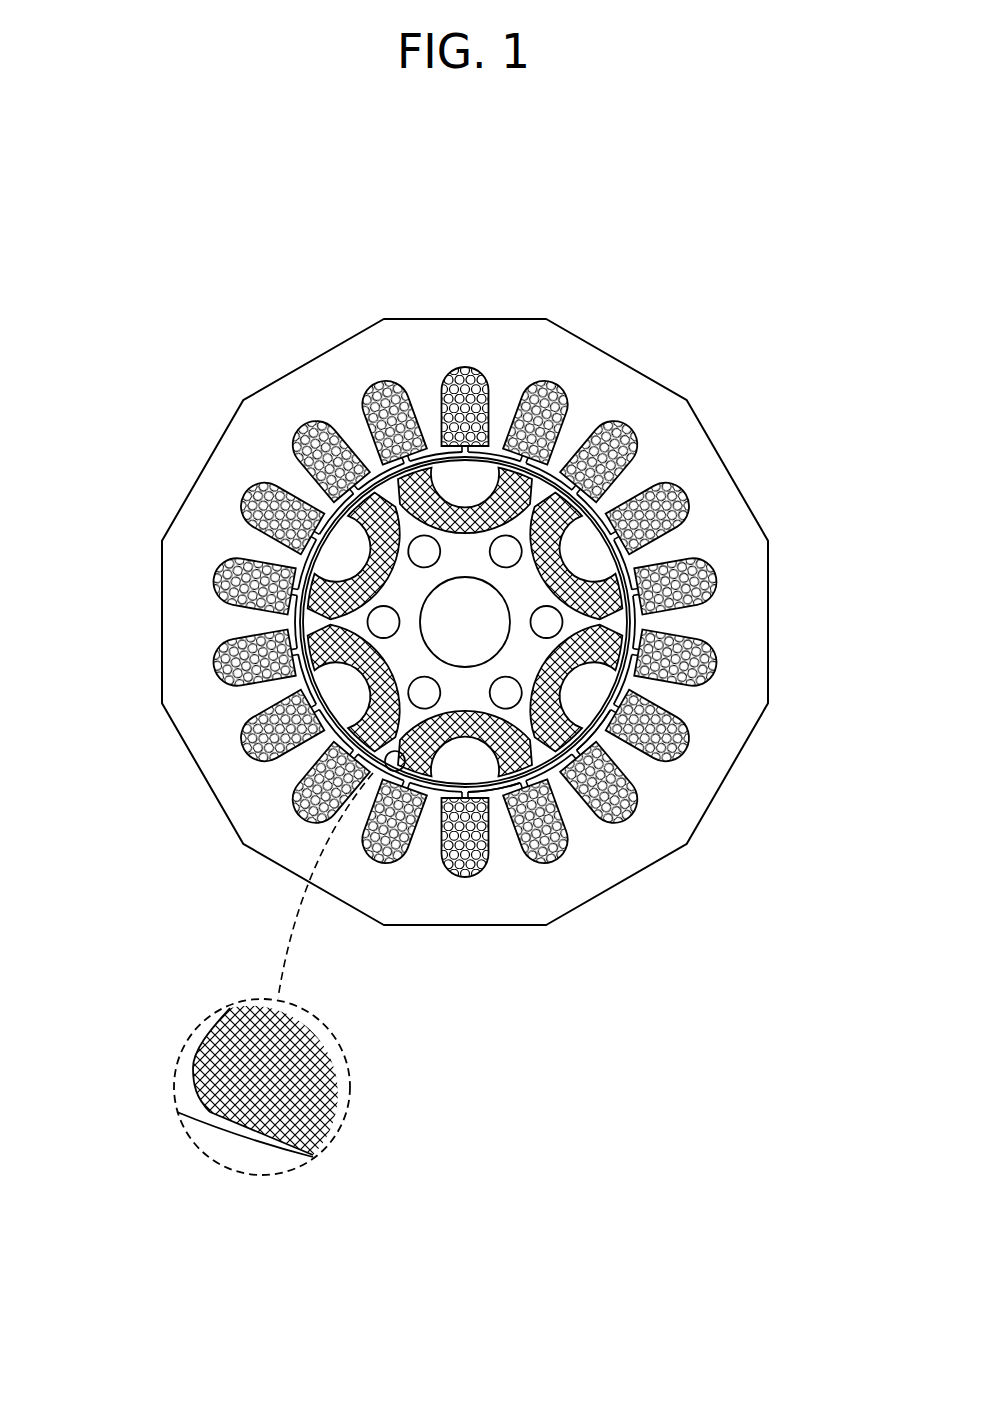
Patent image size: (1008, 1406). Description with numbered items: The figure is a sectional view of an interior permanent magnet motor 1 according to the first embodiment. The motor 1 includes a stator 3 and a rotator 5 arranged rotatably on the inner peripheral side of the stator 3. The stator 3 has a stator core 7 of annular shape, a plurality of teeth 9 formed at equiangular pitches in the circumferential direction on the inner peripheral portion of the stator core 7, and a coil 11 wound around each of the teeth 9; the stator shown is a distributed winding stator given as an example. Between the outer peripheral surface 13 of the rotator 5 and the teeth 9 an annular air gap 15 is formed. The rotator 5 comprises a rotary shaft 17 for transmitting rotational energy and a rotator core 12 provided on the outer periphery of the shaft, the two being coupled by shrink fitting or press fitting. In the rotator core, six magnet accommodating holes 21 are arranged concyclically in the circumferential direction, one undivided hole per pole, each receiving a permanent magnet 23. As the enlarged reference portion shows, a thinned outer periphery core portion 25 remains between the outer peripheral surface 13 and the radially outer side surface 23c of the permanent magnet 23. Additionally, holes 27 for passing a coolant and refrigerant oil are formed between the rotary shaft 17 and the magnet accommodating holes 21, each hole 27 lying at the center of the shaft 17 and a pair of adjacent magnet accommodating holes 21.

The interior permanent magnet motor 1 is at (143, 262).
The stator 3 is at (490, 318).
The rotator 5 is at (627, 567).
The stator core 7 is at (555, 350).
The teeth 9 is at (620, 493).
The coil 11 is at (713, 580).
The rotor core 12 is at (353, 538).
The outer peripheral surface 13 is at (433, 790).
The annular air gap 15 is at (600, 733).
The rotary shaft 17 is at (447, 632).
The magnet accommodating holes 21 is at (437, 470).
The permanent magnet 23 is at (405, 485).
The radially outer side surface 23c is at (193, 1138).
The thinned outer periphery core portion 25 is at (237, 1139).
The holes 27 is at (425, 693).